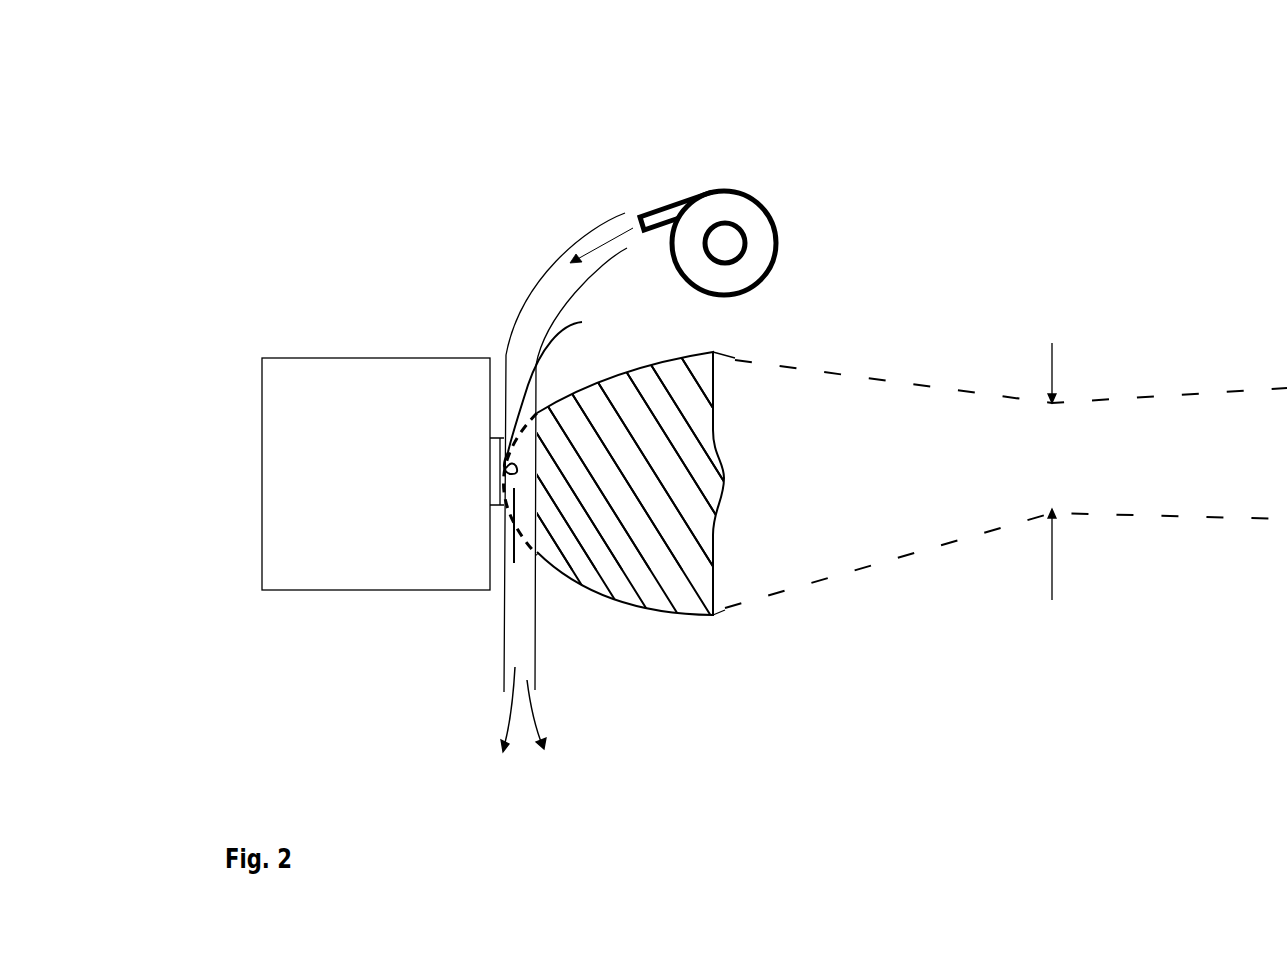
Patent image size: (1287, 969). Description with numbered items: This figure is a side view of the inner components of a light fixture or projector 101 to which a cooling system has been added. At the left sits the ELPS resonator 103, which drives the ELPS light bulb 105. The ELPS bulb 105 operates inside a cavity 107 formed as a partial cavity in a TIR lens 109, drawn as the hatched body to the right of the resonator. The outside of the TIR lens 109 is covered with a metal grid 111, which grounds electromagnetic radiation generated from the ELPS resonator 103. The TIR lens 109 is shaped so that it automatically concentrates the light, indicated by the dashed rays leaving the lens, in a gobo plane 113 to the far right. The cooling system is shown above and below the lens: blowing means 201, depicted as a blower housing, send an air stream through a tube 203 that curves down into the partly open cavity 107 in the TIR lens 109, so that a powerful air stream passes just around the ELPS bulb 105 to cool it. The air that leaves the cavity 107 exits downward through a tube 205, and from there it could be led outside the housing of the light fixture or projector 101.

The light fixture or projector 101 is at (376, 183).
The ELPS resonator 103 is at (340, 357).
The ELPS light bulb 105 is at (582, 322).
The cavity 107 is at (514, 563).
The TIR lens 109 is at (714, 352).
The metal grid 111 is at (628, 572).
The gobo plane 113 is at (1060, 330).
The blowing means 201 is at (740, 223).
The tube 203 is at (607, 215).
The tube 205 is at (535, 660).